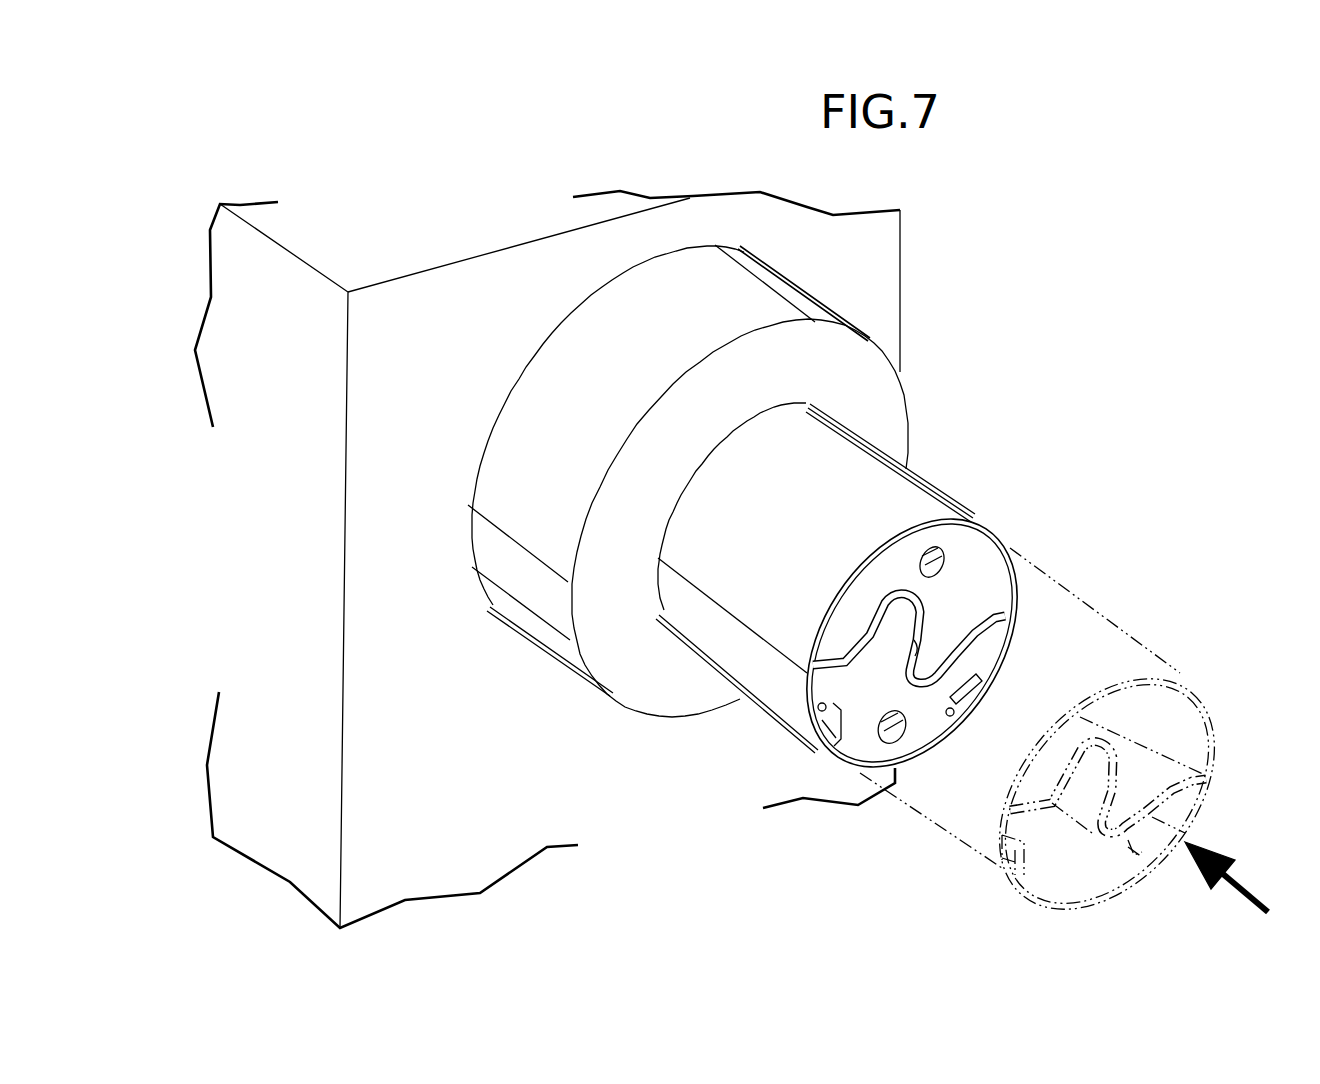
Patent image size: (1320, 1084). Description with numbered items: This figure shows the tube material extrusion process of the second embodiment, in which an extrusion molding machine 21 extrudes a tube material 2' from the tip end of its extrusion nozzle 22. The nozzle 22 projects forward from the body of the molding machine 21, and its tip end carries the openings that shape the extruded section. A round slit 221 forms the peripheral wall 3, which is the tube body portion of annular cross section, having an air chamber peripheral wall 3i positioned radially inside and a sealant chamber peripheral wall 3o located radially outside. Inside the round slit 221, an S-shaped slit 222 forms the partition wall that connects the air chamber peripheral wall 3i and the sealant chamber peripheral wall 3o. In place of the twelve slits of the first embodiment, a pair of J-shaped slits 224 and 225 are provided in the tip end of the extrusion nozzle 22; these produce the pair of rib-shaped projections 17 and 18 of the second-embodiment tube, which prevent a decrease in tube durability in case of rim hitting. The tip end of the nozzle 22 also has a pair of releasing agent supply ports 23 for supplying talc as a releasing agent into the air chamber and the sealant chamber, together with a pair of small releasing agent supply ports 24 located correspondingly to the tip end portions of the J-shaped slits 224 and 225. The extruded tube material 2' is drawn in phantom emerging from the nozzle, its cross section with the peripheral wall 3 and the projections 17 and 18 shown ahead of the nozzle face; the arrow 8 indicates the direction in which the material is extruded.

The extrusion molding machine 21 is at (913, 342).
The extrusion nozzle 22 is at (949, 490).
The round slit 221 is at (916, 533).
The S-shaped slit 222 is at (910, 663).
The J-shaped slit 224 is at (825, 733).
The J-shaped slit 225 is at (972, 688).
The releasing agent supply port 23 is at (928, 572).
The small releasing agent supply port 24 is at (818, 704).
The tube material 2' is at (1020, 695).
The peripheral wall 3 is at (1306, 763).
The sealant chamber peripheral wall 3o is at (1218, 735).
The air chamber peripheral wall 3i is at (1184, 826).
The rib-shaped projection 17 is at (1000, 858).
The rib-shaped projection 18 is at (1136, 857).
The insertion direction arrow 8 is at (1244, 893).